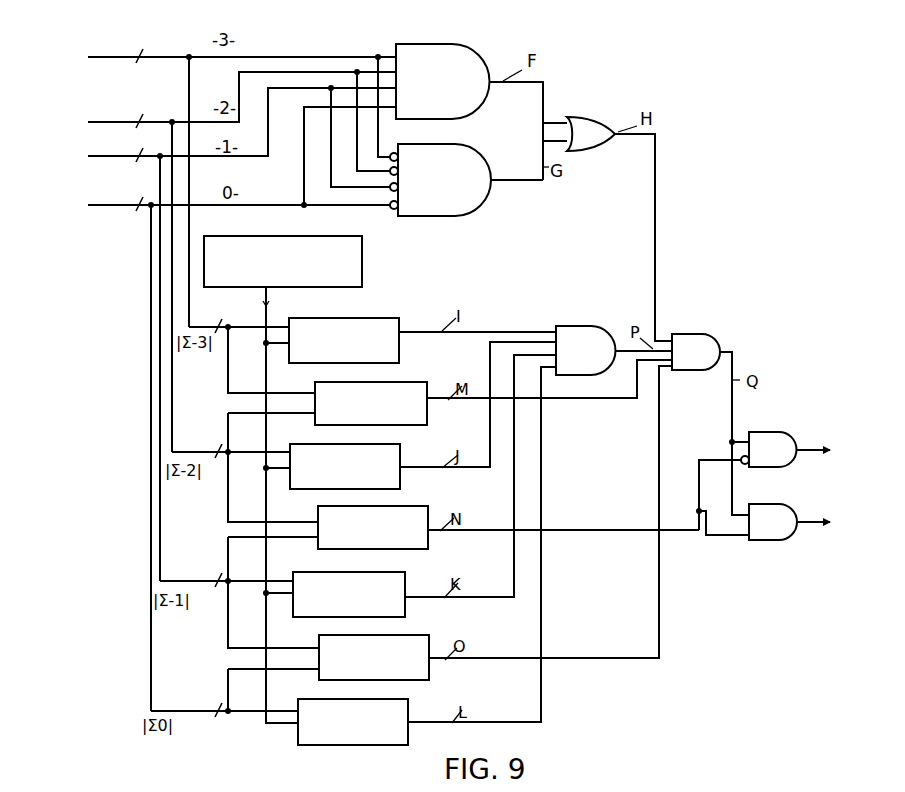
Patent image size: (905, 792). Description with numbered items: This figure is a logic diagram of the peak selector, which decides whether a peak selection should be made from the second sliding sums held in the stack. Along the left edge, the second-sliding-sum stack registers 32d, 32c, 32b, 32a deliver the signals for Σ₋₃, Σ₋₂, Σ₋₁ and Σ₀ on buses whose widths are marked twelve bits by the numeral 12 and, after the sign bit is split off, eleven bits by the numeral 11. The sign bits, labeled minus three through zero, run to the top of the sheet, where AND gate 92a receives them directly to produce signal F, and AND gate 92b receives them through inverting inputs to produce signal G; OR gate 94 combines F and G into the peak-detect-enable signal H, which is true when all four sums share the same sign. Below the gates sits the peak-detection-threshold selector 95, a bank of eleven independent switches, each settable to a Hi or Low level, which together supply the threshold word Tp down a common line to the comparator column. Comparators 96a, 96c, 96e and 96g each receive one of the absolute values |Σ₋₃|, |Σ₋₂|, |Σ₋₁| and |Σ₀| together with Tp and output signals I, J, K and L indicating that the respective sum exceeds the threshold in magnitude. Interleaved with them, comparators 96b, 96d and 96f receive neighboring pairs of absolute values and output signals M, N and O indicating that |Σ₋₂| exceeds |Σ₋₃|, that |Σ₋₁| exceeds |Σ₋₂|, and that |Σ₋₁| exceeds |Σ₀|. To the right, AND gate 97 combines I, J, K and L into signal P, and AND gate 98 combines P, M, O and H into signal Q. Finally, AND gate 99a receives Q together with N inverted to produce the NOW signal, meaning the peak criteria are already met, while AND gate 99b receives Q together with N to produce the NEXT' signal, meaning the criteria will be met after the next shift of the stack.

The second-sliding-sum stack register 32a is at (218, 409).
The second-sliding-sum stack register 32b is at (218, 334).
The second-sliding-sum stack register 32c is at (218, 262).
The second-sliding-sum stack register 32d is at (218, 186).
The input buffer 12 is at (139, 121).
The eleven-bit bus width indicator 11 is at (220, 507).
The AND gate 92a is at (452, 55).
The AND gate 92b is at (458, 158).
The OR gate 94 is at (590, 123).
The peak-detection-threshold selector 95 is at (360, 246).
The comparator 96a is at (374, 328).
The comparator 96b is at (410, 390).
The comparator 96c is at (385, 460).
The comparator 96d is at (410, 521).
The comparator 96e is at (395, 580).
The comparator 96f is at (420, 645).
The comparator 96g is at (400, 708).
The AND gate 97 is at (572, 331).
The AND gate 98 is at (690, 338).
The AND gate 99a is at (762, 441).
The AND gate 99b is at (762, 514).